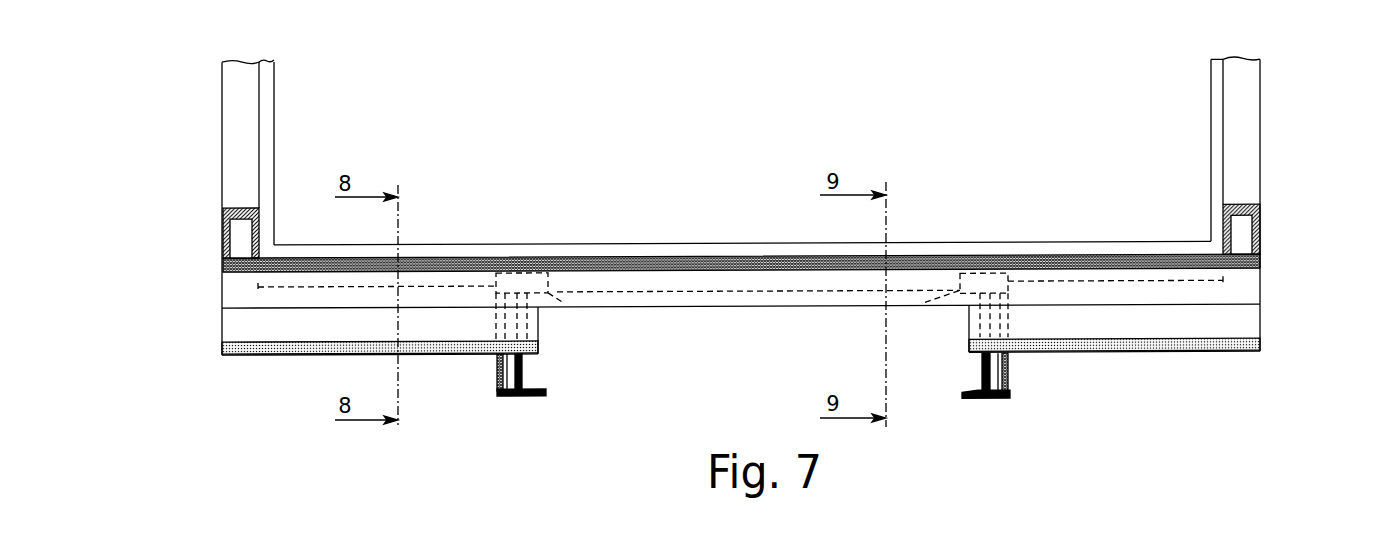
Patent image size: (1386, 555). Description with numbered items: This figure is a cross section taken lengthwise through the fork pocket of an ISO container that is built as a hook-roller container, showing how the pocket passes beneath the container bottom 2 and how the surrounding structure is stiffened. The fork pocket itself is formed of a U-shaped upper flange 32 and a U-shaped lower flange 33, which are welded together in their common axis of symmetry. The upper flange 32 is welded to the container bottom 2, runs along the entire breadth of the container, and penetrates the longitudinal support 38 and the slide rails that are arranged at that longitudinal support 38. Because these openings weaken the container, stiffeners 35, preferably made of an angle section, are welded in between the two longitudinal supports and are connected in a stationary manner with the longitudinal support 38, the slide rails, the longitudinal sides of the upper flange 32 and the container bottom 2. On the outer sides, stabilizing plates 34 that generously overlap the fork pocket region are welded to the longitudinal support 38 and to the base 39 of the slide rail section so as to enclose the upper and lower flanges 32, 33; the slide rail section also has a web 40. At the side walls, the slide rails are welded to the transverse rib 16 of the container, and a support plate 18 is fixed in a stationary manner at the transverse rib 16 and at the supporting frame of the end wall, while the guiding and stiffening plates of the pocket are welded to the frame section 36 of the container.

The container bottom 2 is at (1210, 248).
The transverse rib 16 is at (1227, 93).
The support plate 18 is at (1243, 148).
The upper flange 32 is at (260, 273).
The lower flange 33 is at (275, 350).
The stabilizing plate 34 is at (497, 372).
The stiffener 35 is at (897, 291).
The frame section 36 is at (223, 236).
The longitudinal support 38 is at (547, 256).
The base 39 is at (540, 400).
The web 40 is at (498, 398).